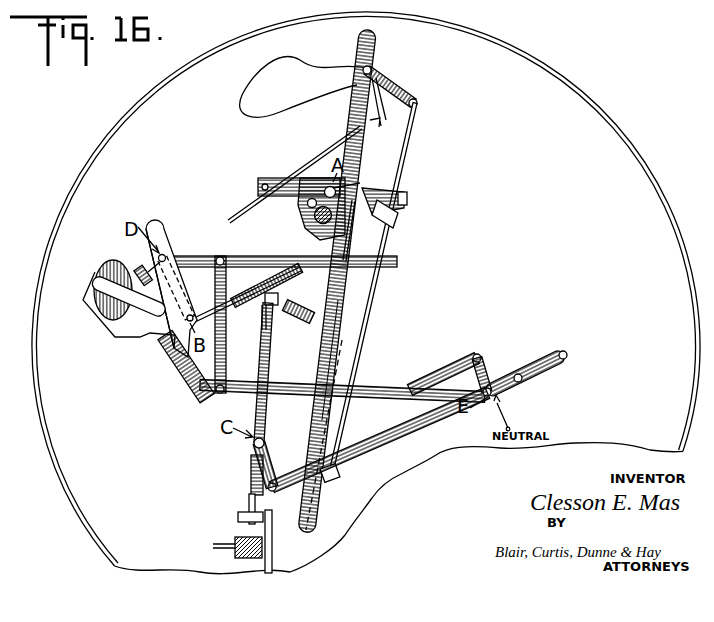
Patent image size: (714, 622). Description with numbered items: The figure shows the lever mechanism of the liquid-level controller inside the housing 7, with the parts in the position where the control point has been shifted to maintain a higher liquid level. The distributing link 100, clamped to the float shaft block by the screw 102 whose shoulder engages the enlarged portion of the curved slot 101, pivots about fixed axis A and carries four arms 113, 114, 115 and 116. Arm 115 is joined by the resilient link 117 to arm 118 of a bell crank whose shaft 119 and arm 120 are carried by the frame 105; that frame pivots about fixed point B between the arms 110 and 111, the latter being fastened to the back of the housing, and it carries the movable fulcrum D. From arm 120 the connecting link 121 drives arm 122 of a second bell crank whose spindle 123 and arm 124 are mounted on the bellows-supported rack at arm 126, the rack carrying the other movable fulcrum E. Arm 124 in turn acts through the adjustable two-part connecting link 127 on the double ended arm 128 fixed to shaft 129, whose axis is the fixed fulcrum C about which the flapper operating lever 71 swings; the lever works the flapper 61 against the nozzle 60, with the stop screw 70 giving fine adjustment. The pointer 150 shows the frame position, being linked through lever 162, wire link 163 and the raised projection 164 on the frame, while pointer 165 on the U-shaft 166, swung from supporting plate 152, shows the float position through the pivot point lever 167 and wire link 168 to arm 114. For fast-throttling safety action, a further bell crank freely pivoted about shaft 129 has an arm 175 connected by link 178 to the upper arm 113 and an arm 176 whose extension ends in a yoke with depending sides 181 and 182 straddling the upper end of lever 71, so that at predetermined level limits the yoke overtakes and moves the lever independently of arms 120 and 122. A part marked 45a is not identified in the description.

The housing 7 is at (453, 443).
The shaft 45a is at (363, 175).
The nozzle 60 is at (243, 556).
The flapper 61 is at (271, 530).
The adjustable stop screw 70 is at (253, 483).
The flapper operating lever 71 is at (278, 303).
The distributing link 100 is at (324, 195).
The curved slot 101 is at (308, 207).
The screw 102 is at (322, 224).
The frame 105 is at (111, 336).
The arm 110 is at (93, 285).
The arm 111 is at (93, 310).
The upper arm of distributing link 113 is at (403, 192).
The arm of distributing link 114 is at (403, 218).
The arm of distributing link 115 is at (355, 256).
The arm of distributing link 116 is at (265, 177).
The resilient link 117 is at (262, 286).
The arm 118 is at (189, 288).
The shaft 119 is at (165, 255).
The arm 120 is at (247, 256).
The connecting link 121 is at (218, 365).
The arm 122 is at (370, 385).
The spindle 123 is at (490, 387).
The arm 124 is at (497, 342).
The arm of rack 126 is at (545, 363).
The connecting link 127 is at (377, 427).
The double ended arm 128 is at (267, 460).
The shaft 129 is at (252, 443).
The pointer 150 is at (342, 350).
The supporting plate 152 is at (280, 84).
The lever 162 is at (389, 114).
The wire link 163 is at (316, 152).
The raised projection 164 is at (140, 270).
The pointer 165 is at (338, 327).
The U-shaft 166 is at (378, 47).
The pivot point lever 167 is at (392, 93).
The wire link 168 is at (416, 124).
The arm 175 is at (287, 453).
The arm 176 is at (282, 360).
The link 178 is at (375, 288).
The depending side 181 is at (263, 307).
The depending side 182 is at (314, 316).